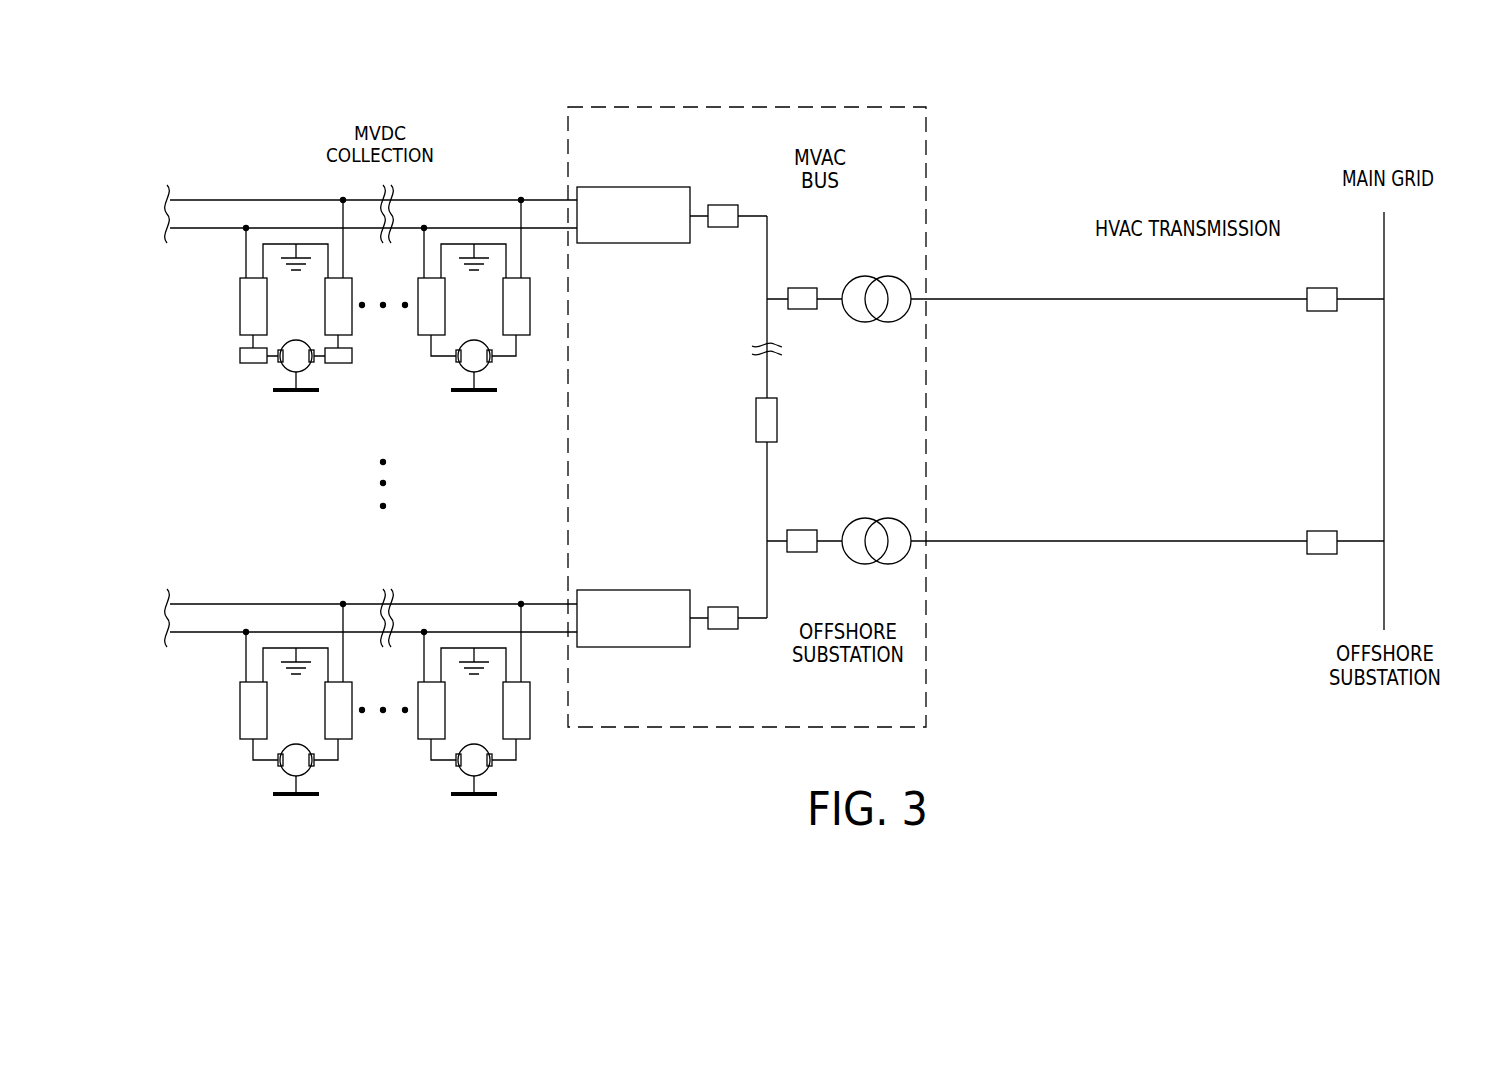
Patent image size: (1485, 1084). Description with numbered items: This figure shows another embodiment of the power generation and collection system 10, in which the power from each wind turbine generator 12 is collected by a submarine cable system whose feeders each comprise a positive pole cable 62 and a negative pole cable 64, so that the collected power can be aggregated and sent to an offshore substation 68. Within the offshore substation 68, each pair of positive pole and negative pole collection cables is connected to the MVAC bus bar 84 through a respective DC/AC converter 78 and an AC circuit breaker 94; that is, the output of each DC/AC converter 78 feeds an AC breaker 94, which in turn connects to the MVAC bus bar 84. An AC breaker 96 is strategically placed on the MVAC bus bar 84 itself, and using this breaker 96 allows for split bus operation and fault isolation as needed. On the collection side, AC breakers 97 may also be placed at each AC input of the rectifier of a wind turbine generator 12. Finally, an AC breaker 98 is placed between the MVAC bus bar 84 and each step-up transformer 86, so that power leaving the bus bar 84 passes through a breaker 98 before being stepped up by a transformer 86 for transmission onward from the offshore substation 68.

The power generation and collection system 10 is at (1110, 170).
The wind turbine generator 12 is at (302, 445).
The positive pole cable 62 is at (467, 200).
The negative pole cable 64 is at (443, 228).
The offshore substation 68 is at (882, 88).
The DC/AC converter 78 is at (652, 170).
The MVAC bus bar 84 is at (770, 248).
The step-up transformer 86 is at (875, 519).
The AC circuit breaker 94 is at (722, 228).
The AC breaker 96 is at (777, 418).
The AC breaker 97 is at (250, 363).
The AC breaker 98 is at (803, 309).